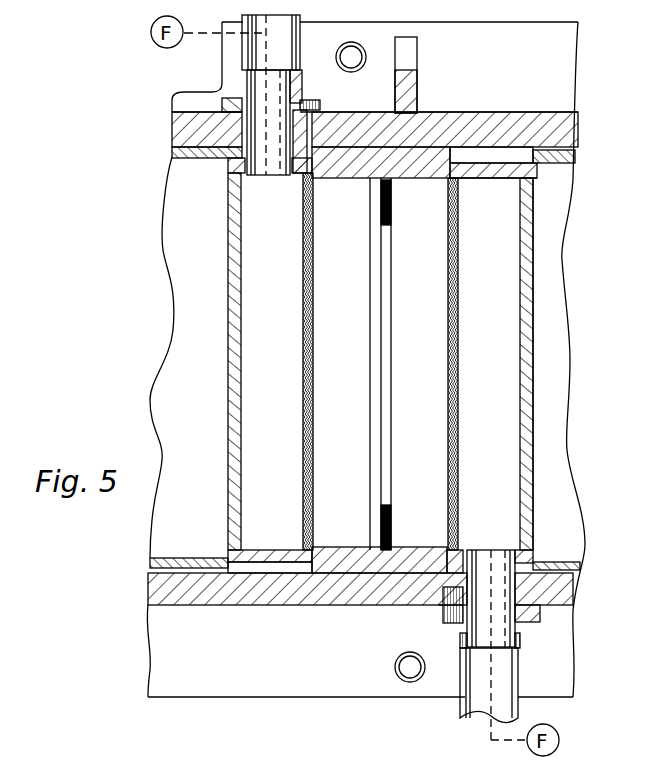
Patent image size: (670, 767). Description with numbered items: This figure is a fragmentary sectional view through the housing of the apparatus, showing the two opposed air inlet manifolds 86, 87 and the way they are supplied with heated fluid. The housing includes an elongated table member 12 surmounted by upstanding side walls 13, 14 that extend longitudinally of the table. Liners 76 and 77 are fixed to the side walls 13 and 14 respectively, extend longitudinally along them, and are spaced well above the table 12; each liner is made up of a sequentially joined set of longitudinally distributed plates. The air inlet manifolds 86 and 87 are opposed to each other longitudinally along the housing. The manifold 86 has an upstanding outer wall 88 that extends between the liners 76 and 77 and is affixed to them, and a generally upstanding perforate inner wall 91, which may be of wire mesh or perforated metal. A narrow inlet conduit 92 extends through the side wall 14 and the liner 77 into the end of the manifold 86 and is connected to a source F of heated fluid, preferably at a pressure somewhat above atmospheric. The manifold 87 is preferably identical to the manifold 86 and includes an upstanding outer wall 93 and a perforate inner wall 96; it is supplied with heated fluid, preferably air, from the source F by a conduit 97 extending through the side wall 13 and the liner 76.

The table member 12 is at (218, 683).
The side wall 13 is at (252, 590).
The side wall 14 is at (470, 122).
The liner 76 is at (283, 550).
The liner 77 is at (580, 160).
The air inlet manifold 86 is at (390, 361).
The air inlet manifold 87 is at (547, 362).
The outer wall 88 is at (233, 244).
The perforate inner wall 91 is at (311, 322).
The inlet conduit 92 is at (290, 178).
The outer wall 93 is at (527, 427).
The perforate inner wall 96 is at (449, 416).
The conduit 97 is at (521, 637).